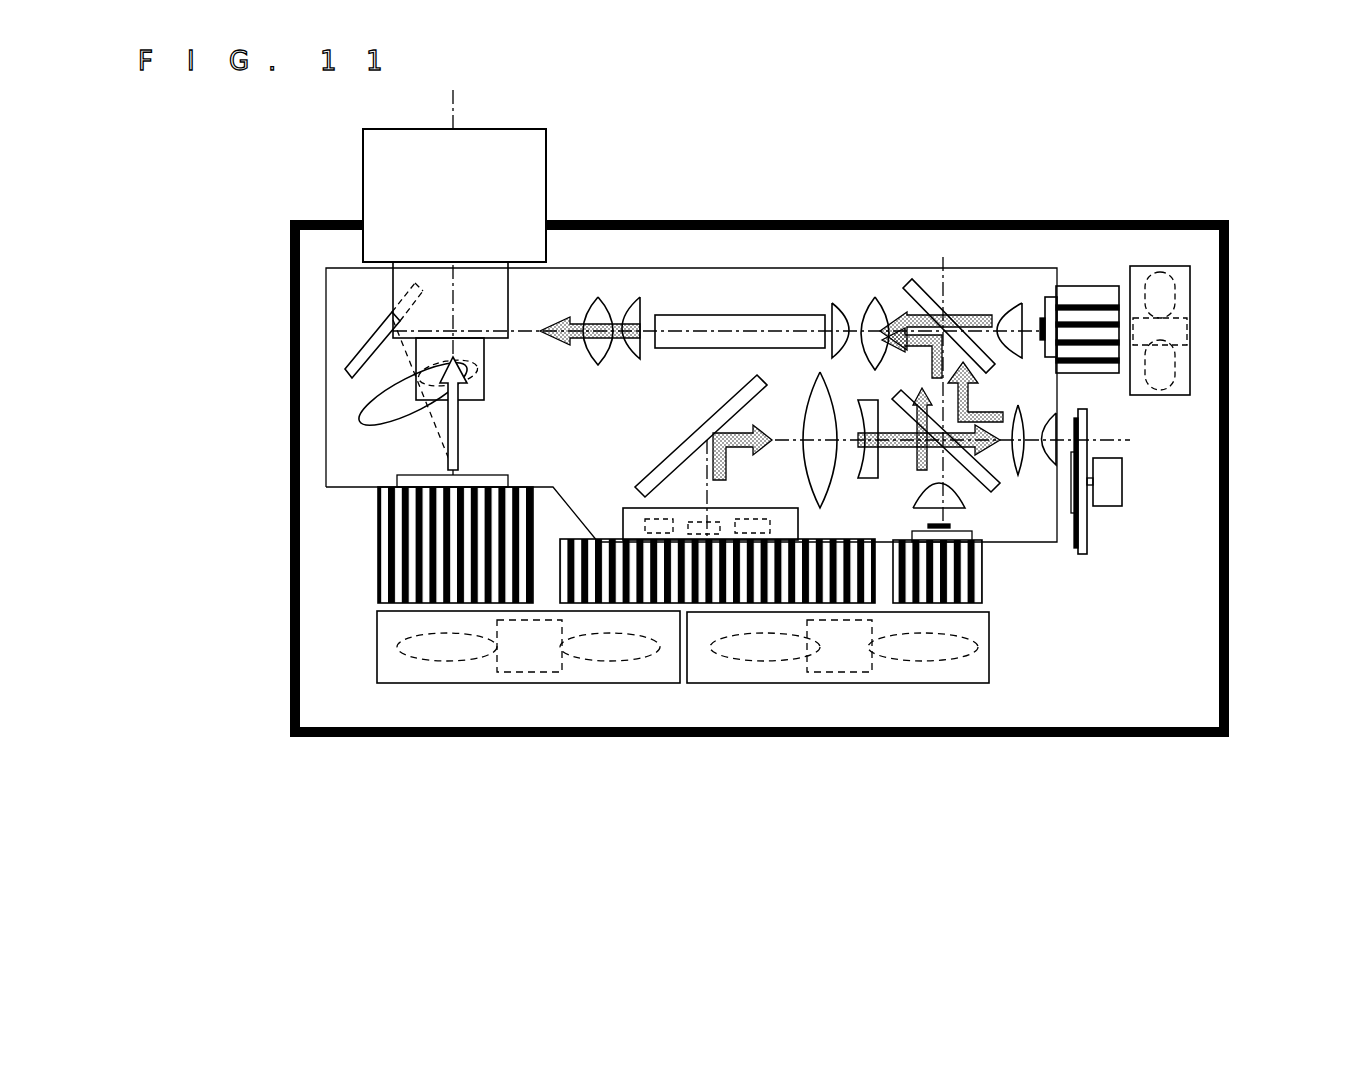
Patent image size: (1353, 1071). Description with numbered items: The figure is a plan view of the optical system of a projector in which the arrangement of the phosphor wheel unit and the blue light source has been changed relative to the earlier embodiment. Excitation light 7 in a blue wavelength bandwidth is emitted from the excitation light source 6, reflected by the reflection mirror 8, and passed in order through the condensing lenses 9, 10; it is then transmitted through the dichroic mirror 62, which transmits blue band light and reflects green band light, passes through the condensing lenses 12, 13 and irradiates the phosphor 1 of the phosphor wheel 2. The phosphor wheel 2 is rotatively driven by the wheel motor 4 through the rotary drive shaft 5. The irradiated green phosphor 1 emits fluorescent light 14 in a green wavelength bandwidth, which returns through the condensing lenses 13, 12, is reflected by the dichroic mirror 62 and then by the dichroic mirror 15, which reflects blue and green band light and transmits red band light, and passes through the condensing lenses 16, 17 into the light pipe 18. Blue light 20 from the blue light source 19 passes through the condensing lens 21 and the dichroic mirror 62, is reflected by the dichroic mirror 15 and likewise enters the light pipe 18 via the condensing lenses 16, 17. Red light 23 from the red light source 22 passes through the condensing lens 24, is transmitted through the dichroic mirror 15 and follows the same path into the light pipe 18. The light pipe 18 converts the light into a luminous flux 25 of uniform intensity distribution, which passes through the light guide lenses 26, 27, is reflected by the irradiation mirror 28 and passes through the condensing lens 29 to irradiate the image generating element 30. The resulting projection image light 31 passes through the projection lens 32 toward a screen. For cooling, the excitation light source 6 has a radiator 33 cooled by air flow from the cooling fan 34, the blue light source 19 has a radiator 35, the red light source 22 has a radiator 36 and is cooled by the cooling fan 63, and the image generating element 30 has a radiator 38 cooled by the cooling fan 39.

The phosphor 1 is at (1073, 556).
The phosphor wheel 2 is at (1082, 556).
The wheel motor 4 is at (1110, 485).
The rotary drive shaft 5 is at (1089, 484).
The excitation light source 6 is at (705, 518).
The excitation light 7 is at (748, 395).
The reflection mirror 8 is at (688, 447).
The condensing lens 9 is at (818, 380).
The condensing lens 10 is at (865, 400).
The condensing lens 12 is at (1020, 420).
The condensing lens 13 is at (1050, 452).
The fluorescent light 14 is at (980, 400).
The dichroic mirror 15 is at (925, 310).
The condensing lens 16 is at (878, 310).
The condensing lens 17 is at (838, 300).
The light pipe 18 is at (712, 325).
The blue light source 19 is at (960, 525).
The blue light 20 is at (918, 455).
The condensing lens 21 is at (930, 503).
The red light source 22 is at (1048, 325).
The red light 23 is at (975, 328).
The condensing lens 24 is at (1012, 330).
The luminous flux 25 is at (565, 322).
The light guide lens 26 is at (632, 325).
The light guide lens 27 is at (598, 300).
The irradiation mirror 28 is at (350, 372).
The condensing lens 29 is at (375, 410).
The image generating element 30 is at (410, 480).
The projection image light 31 is at (440, 445).
The projection lens 32 is at (502, 142).
The radiator 33 is at (728, 590).
The cooling fan 34 is at (838, 660).
The radiator 35 is at (953, 590).
The radiator 36 is at (1105, 305).
The radiator 38 is at (437, 590).
The cooling fan 39 is at (520, 660).
The dichroic mirror 62 is at (990, 482).
The cooling fan 63 is at (1168, 382).